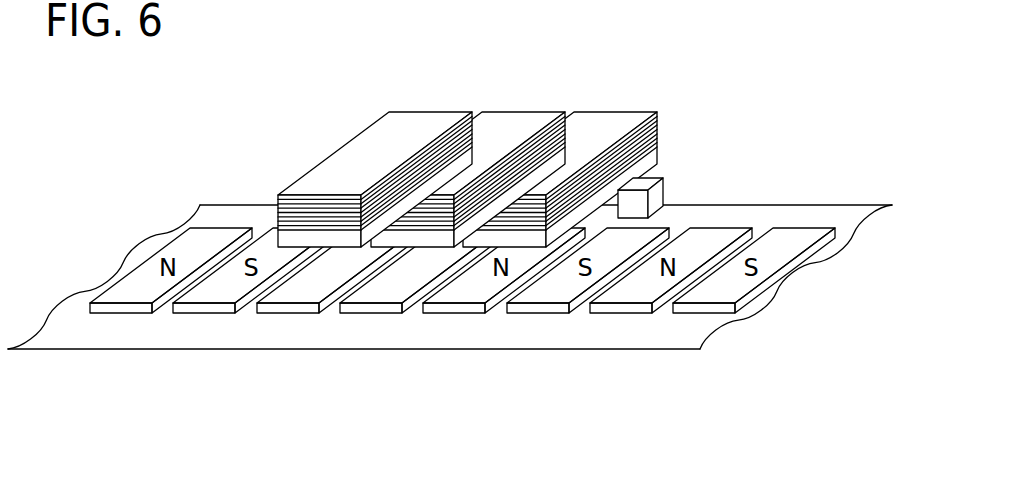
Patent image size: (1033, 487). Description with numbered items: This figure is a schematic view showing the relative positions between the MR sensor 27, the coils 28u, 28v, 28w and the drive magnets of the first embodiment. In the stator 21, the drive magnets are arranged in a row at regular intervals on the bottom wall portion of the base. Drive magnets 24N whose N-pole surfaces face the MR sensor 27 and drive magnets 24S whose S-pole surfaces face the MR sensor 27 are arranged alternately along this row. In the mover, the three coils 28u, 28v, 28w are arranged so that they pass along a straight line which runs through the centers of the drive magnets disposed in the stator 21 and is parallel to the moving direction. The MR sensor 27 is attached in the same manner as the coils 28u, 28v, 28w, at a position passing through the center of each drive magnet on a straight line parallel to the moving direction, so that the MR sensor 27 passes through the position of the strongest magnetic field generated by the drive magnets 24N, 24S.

The stator 21 is at (109, 352).
The drive magnet 24N is at (287, 308).
The drive magnet 24S is at (370, 308).
The MR sensor 27 is at (658, 195).
The coil 28u is at (427, 112).
The coil 28v is at (520, 112).
The coil 28w is at (612, 112).